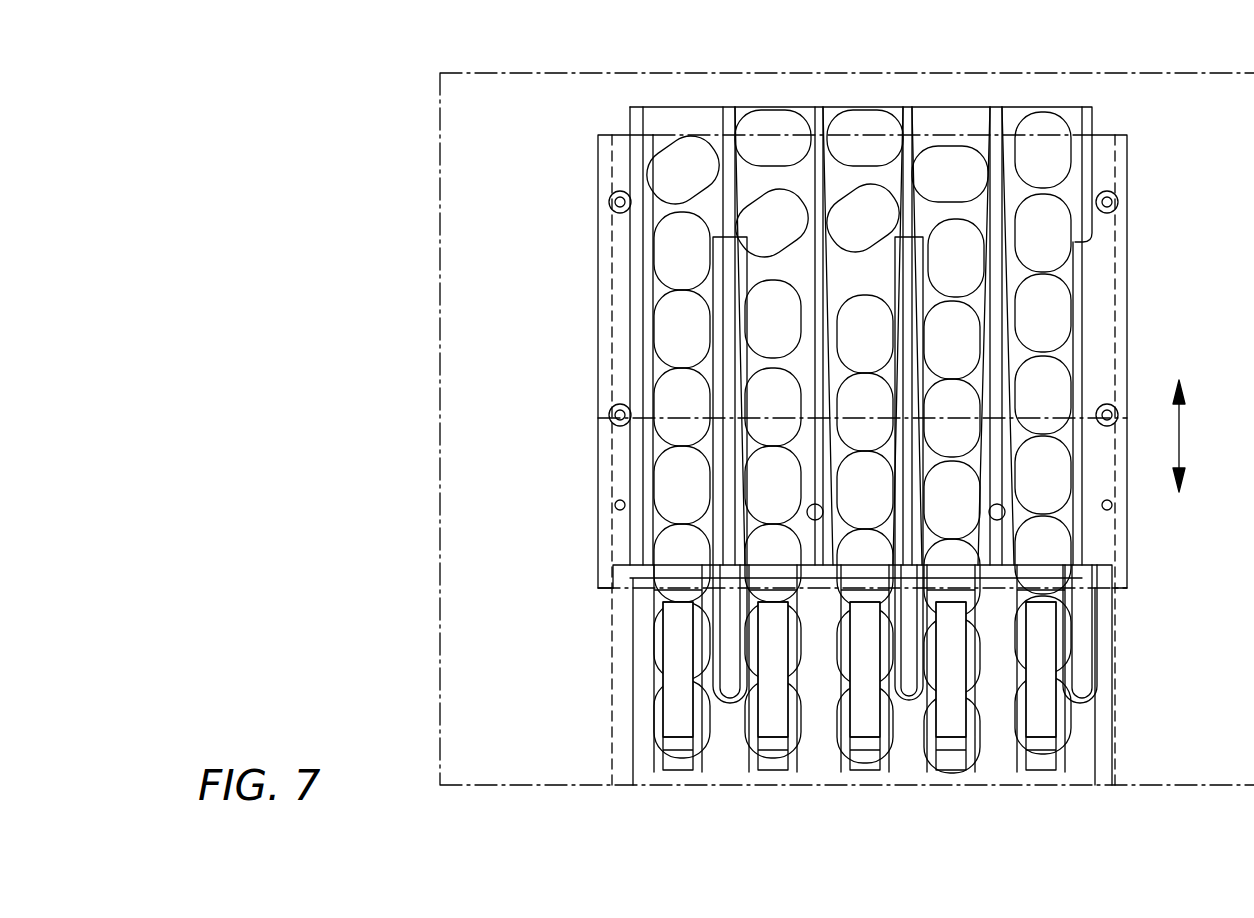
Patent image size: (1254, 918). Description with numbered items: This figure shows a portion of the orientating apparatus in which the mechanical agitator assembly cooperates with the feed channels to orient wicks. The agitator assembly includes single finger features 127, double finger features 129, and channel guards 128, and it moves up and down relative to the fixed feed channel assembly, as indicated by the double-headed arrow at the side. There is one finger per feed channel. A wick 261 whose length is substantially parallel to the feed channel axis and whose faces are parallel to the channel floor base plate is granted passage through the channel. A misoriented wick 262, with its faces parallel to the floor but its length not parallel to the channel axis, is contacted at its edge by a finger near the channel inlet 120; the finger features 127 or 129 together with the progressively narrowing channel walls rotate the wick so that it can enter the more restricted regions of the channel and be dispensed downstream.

The channel inlet 120 is at (896, 404).
The misoriented wick 262 is at (868, 125).
The wick 261 is at (1043, 127).
The double finger features 129 is at (713, 255).
The single finger features 127 is at (1080, 272).
The channel guards 128 is at (678, 655).